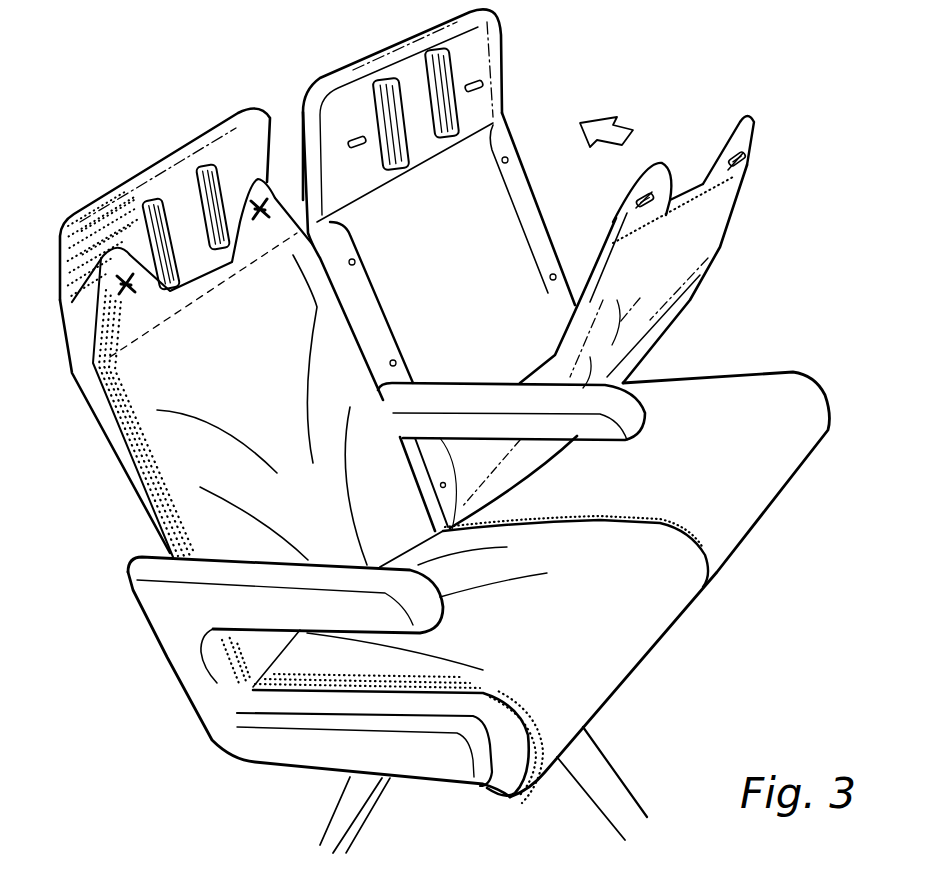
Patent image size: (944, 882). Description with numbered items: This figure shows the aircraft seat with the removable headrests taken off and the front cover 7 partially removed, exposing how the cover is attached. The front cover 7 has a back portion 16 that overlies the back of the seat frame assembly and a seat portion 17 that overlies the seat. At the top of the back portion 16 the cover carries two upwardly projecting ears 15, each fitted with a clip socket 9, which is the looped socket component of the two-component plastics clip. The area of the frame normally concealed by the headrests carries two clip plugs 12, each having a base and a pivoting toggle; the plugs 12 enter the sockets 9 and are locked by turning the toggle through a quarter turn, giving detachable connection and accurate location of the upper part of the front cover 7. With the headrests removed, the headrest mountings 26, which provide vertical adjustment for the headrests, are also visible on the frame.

The front cover 7 is at (190, 383).
The clip socket 9 is at (632, 208).
The clip plug 12 is at (357, 136).
The upwardly projecting ear 15 is at (260, 192).
The back portion of the front cover 16 is at (673, 279).
The seat portion of the front cover 17 is at (732, 459).
The headrest mounting 26 is at (207, 232).